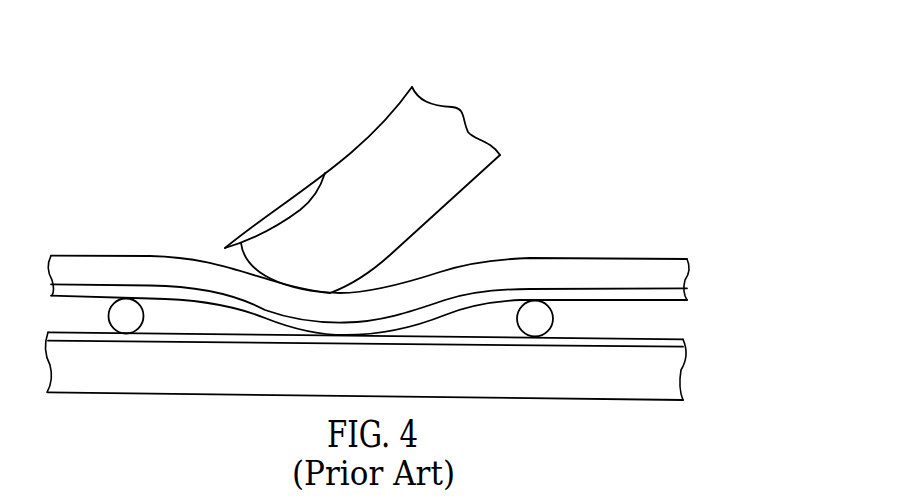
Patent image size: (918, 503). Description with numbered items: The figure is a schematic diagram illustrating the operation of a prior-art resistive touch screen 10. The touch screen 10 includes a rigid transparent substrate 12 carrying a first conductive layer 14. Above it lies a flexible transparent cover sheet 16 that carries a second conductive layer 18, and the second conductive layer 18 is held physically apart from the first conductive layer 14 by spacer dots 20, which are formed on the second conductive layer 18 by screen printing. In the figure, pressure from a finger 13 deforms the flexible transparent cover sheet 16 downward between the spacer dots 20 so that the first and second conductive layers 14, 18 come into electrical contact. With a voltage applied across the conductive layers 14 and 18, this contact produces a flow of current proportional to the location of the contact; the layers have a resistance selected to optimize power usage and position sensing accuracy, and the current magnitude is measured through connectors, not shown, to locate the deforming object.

The resistive touch screen 10 is at (645, 176).
The rigid transparent substrate 12 is at (672, 377).
The finger 13 is at (443, 127).
The first conductive layer 14 is at (680, 345).
The flexible transparent cover sheet 16 is at (675, 272).
The second conductive layer 18 is at (675, 293).
The spacer dots 20 is at (535, 318).